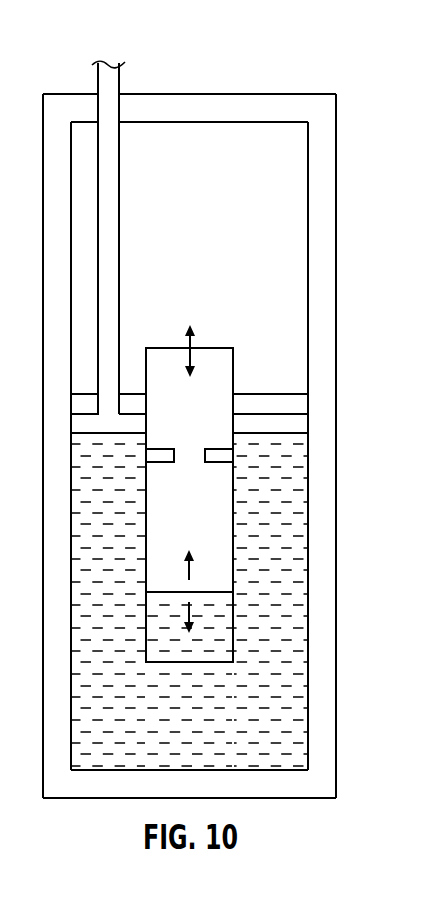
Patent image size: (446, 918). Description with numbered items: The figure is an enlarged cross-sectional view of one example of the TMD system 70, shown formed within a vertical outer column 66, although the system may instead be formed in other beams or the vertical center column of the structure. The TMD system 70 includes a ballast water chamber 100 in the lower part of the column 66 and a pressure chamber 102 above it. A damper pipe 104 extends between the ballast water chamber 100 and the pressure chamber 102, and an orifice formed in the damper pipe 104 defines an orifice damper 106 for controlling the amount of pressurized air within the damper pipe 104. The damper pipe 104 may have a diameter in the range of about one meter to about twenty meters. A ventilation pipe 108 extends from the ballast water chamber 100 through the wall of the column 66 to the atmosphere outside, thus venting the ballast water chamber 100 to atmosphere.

The TMD system 70 is at (173, 82).
The vertical outer column 66 is at (330, 138).
The pressure chamber 102 is at (288, 205).
The ventilation pipe 108 is at (97, 77).
The ballast water chamber 100 is at (298, 753).
The damper pipe 104 is at (233, 545).
The orifice damper 106 is at (203, 455).